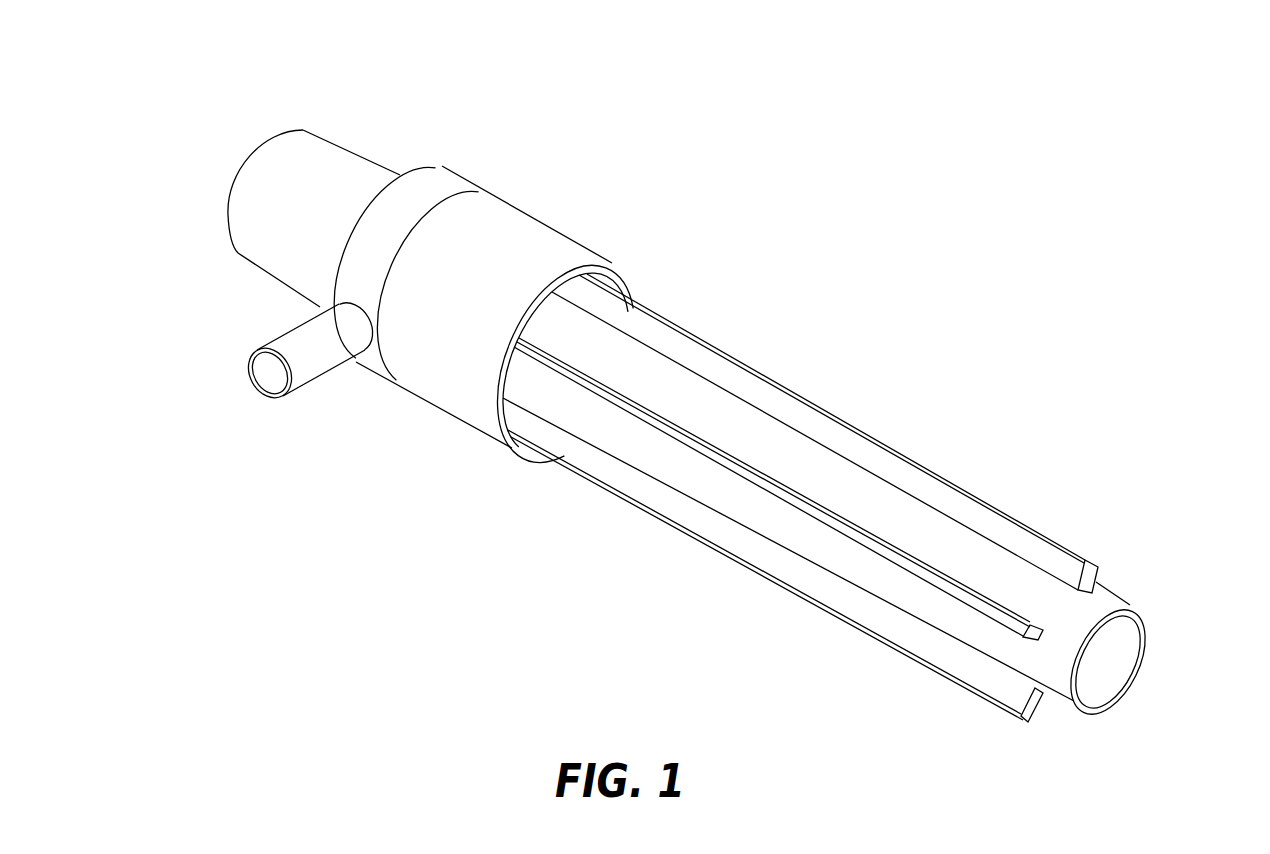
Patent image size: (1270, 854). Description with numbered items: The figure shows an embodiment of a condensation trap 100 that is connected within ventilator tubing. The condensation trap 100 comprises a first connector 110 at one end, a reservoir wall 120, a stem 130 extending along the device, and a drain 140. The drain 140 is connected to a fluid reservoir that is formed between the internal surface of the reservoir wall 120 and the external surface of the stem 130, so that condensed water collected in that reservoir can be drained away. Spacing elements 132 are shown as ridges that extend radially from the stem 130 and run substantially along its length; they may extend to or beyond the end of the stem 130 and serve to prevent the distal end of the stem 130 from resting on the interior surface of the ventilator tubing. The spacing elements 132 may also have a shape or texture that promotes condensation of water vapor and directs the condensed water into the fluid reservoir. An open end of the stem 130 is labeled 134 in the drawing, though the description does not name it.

The condensation trap 100 is at (1040, 183).
The first connector 110 is at (335, 172).
The reservoir wall 120 is at (569, 232).
The stem 130 is at (869, 500).
The spacing elements 132 is at (973, 498).
The lumen 134 is at (1107, 671).
The drain 140 is at (293, 338).